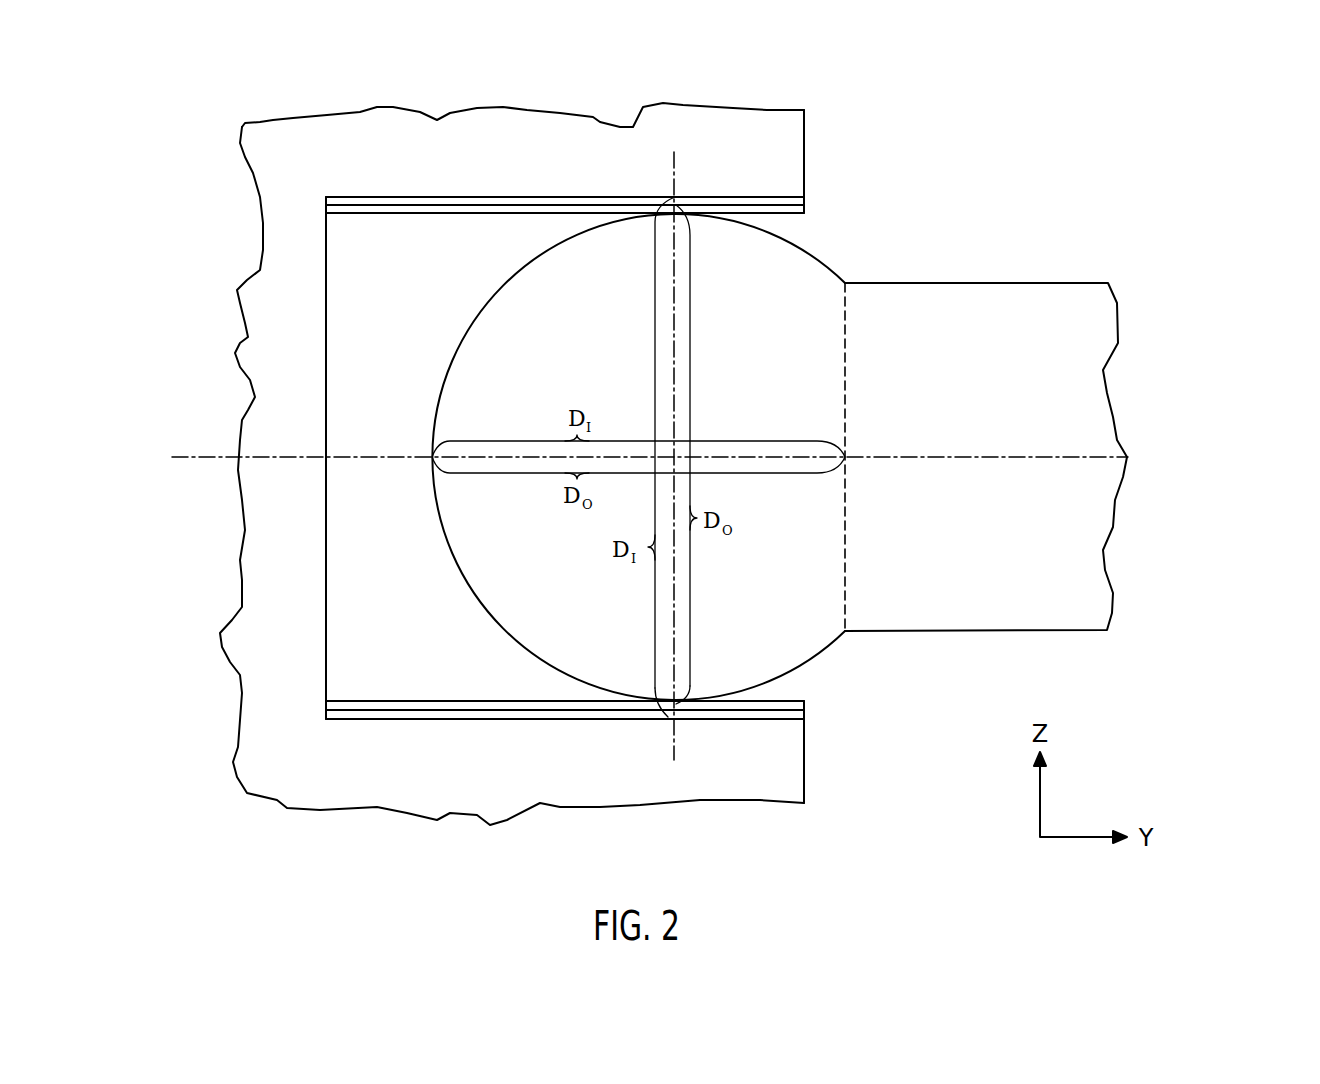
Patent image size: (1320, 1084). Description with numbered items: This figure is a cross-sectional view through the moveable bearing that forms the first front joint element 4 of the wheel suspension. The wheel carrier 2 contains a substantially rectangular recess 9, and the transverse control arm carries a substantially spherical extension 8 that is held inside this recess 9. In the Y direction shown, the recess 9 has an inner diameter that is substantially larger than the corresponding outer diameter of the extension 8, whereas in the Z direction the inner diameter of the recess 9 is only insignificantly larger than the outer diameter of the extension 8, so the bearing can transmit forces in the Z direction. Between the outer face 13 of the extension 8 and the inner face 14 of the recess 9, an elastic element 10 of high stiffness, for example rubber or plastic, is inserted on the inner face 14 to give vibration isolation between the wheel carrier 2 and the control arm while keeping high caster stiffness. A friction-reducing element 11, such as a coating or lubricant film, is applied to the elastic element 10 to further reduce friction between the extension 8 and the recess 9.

The wheel carrier 2 is at (250, 771).
The first front joint element 4 is at (287, 307).
The extension 8 is at (903, 620).
The recess 9 is at (357, 237).
The elastic element 10 is at (805, 198).
The friction-reducing element 11 is at (805, 211).
The outer face 13 is at (528, 262).
The inner face 14 is at (473, 196).